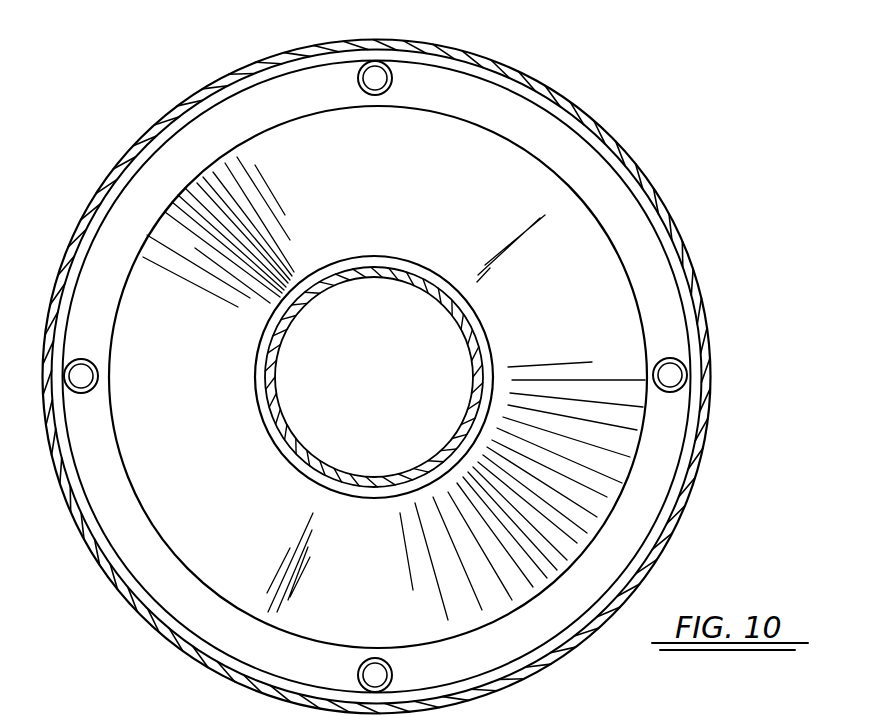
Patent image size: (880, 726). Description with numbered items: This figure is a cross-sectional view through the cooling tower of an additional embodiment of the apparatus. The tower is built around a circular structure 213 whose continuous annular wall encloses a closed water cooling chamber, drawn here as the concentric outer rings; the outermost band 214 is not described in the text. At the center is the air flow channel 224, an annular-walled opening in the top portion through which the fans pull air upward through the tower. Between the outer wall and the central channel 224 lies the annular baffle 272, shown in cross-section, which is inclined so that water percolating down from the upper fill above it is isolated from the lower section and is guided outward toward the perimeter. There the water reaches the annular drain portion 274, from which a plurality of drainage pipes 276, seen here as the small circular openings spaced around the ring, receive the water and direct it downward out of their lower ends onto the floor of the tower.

The circular structure 213 is at (660, 183).
The outer rim 214 is at (550, 90).
The air flow channel 224 is at (435, 412).
The annular baffle 272 is at (586, 304).
The annular drain portion 274 is at (670, 310).
The drainage pipe 276 is at (675, 373).